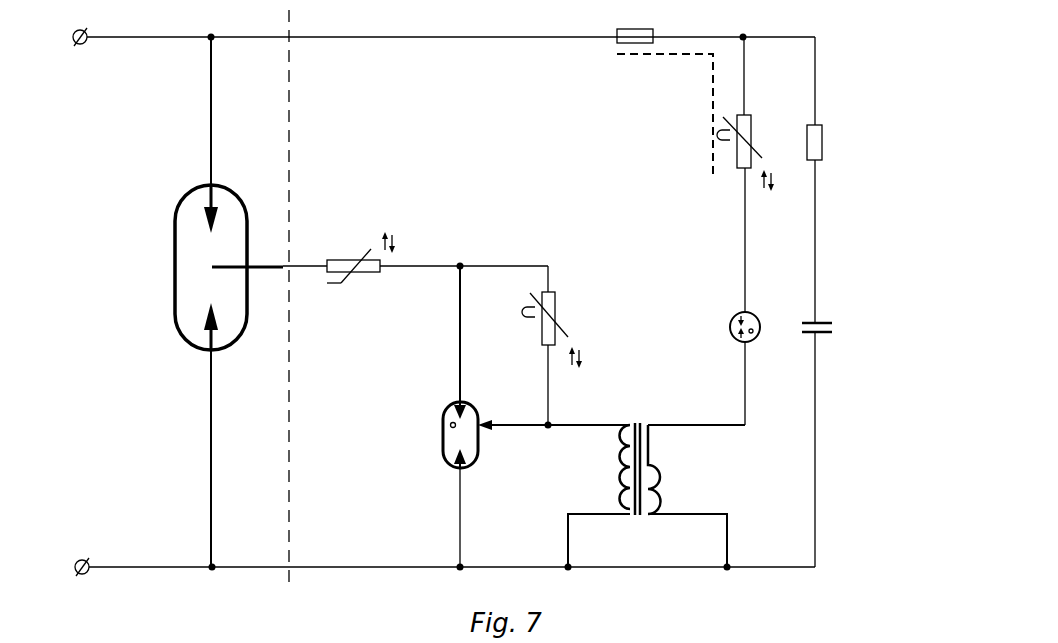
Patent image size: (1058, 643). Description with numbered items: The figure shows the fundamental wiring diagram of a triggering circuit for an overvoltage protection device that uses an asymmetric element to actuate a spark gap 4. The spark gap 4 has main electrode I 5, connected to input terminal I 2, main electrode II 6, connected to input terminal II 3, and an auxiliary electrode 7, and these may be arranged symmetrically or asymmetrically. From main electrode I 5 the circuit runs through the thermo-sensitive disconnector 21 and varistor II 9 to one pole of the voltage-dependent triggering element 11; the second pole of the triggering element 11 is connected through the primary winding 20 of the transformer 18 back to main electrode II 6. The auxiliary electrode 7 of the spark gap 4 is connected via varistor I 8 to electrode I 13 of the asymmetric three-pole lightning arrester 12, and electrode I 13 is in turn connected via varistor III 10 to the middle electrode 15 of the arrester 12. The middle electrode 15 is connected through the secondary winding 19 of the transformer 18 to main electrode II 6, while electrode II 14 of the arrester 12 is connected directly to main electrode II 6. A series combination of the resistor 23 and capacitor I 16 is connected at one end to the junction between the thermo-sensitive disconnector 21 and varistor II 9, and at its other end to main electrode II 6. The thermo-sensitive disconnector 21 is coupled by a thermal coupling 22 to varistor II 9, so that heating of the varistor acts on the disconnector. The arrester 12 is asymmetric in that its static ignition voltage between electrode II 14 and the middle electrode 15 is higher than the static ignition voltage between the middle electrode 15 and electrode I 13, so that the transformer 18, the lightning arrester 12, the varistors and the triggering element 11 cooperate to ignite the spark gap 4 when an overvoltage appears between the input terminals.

The input terminal I 2 is at (85, 45).
The input terminal II 3 is at (90, 562).
The spark gap 4 is at (175, 283).
The main electrode I 5 is at (208, 178).
The main electrode II 6 is at (208, 352).
The auxiliary electrode 7 is at (256, 267).
The varistor I 8 is at (335, 260).
The varistor II 9 is at (752, 128).
The varistor III 10 is at (558, 312).
The voltage-dependent triggering element 11 is at (732, 318).
The asymmetric three-pole lightning arrester 12 is at (443, 432).
The electrode I 13 is at (458, 396).
The electrode II 14 is at (457, 472).
The middle electrode 15 is at (483, 422).
The capacitor I 16 is at (820, 335).
The transformer 18 is at (637, 425).
The secondary winding 19 is at (620, 460).
The primary winding 20 is at (657, 475).
The thermo-sensitive disconnector 21 is at (617, 40).
The thermal coupling 22 is at (711, 86).
The resistor 23 is at (823, 143).